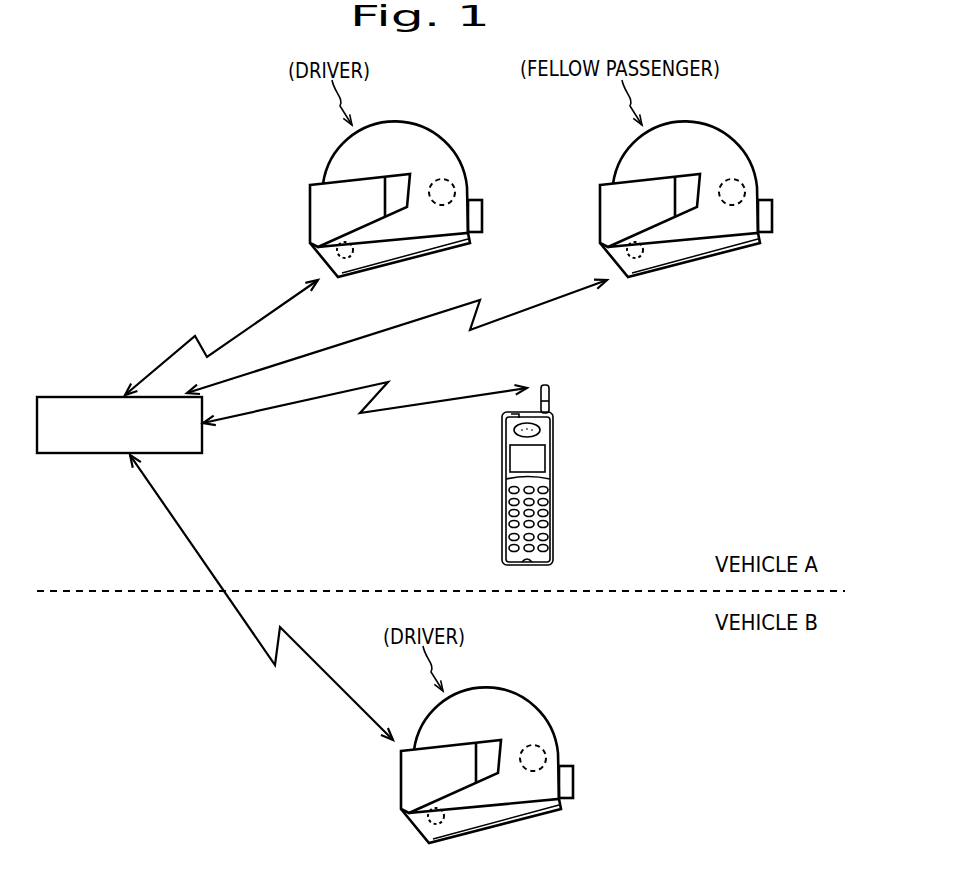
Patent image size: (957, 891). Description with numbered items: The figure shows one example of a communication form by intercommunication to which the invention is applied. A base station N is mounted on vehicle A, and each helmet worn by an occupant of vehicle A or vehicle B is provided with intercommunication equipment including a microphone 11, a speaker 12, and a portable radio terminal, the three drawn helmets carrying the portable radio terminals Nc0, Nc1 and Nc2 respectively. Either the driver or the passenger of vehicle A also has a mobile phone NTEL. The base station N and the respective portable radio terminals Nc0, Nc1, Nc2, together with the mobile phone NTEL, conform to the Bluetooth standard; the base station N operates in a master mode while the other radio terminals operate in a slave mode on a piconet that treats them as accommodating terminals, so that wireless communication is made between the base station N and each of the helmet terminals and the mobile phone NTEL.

The microphone 11 is at (338, 262).
The speaker 12 is at (450, 183).
The portable radio terminal Nc0 is at (482, 208).
The portable radio terminal Nc1 is at (797, 175).
The portable radio terminal Nc2 is at (598, 744).
The base station N is at (190, 455).
The mobile phone NTEL is at (553, 510).